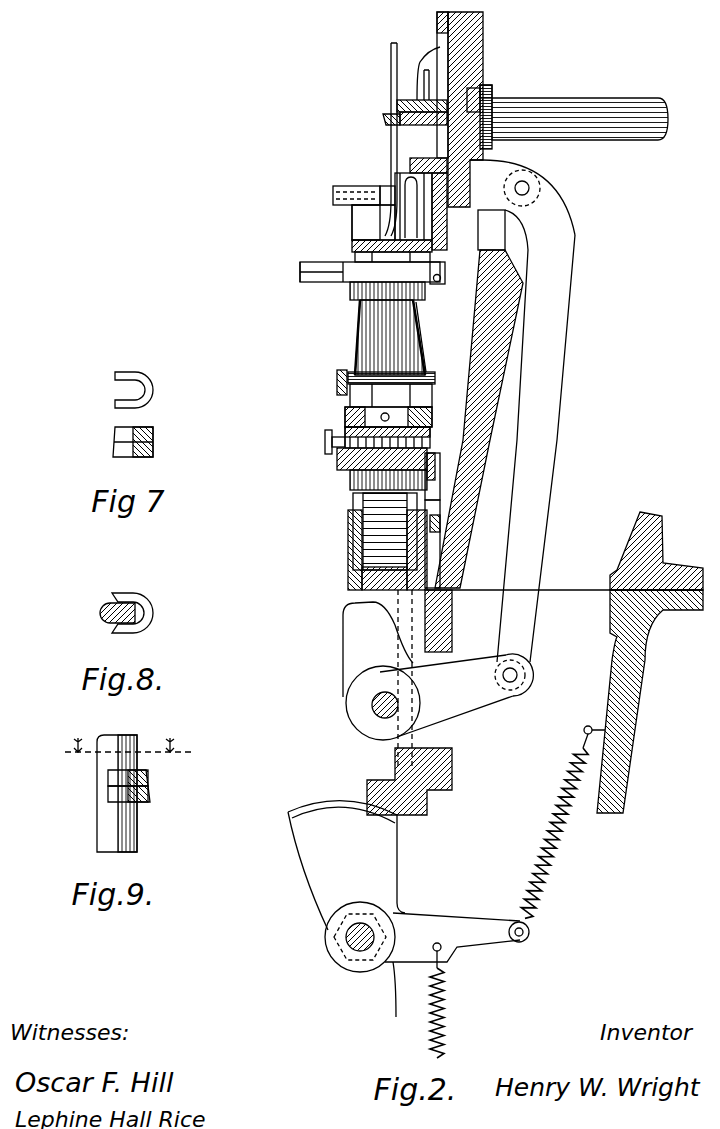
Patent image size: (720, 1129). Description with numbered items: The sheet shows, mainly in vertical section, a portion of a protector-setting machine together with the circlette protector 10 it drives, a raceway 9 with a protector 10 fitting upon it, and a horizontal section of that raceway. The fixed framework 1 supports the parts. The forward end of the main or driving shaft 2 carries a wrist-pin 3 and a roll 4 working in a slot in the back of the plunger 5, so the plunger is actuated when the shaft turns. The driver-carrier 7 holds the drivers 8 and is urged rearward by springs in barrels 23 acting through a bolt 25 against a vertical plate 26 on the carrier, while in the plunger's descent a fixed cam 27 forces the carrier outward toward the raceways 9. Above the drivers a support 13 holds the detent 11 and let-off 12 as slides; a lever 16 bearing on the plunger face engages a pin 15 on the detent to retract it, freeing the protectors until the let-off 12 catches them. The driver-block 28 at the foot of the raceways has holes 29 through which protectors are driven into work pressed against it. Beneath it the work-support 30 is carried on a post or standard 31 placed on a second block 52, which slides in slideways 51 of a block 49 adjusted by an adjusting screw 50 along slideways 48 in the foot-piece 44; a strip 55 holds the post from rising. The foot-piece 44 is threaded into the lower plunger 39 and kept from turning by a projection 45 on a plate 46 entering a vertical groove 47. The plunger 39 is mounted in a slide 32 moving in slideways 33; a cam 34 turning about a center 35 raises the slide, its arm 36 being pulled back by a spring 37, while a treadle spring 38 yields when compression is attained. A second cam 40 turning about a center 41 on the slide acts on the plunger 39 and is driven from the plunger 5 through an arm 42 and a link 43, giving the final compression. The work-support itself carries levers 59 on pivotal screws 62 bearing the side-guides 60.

In FIG. 2, the fixed framework 1 is at (437, 22).
In FIG. 2, the main or driving shaft 2 is at (636, 143).
In FIG. 2, the wrist-pin 3 is at (493, 98).
In FIG. 2, the roll 4 is at (481, 98).
In FIG. 2, the plunger 5 is at (486, 48).
In FIG. 2, the driver-carrier 7 is at (405, 182).
In FIG. 2, the drivers 8 is at (448, 232).
In FIG. 9, the drivers 8 is at (126, 751).
In FIG. 2, the raceways 9 is at (388, 58).
In FIG. 8, the raceways 9 is at (100, 618).
In FIG. 9, the raceways 9 is at (98, 823).
In FIG. 7, the protector 10 is at (100, 455).
In FIG. 8, the protector 10 is at (145, 597).
In FIG. 9, the protector 10 is at (152, 793).
In FIG. 2, the detent 11 is at (403, 101).
In FIG. 2, the let-off 12 is at (398, 114).
In FIG. 2, the support 13 is at (385, 119).
In FIG. 2, the pin 15 is at (483, 86).
In FIG. 2, the lever 16 is at (438, 45).
In FIG. 2, the barrels 23 is at (348, 208).
In FIG. 2, the bolt 25 is at (331, 194).
In FIG. 2, the vertical plate 26 is at (365, 223).
In FIG. 2, the fixed cam 27 is at (508, 228).
In FIG. 2, the driver-block 28 is at (303, 263).
In FIG. 2, the holes 29 is at (410, 293).
In FIG. 2, the work-support 30 is at (298, 276).
In FIG. 2, the post or standard 31 is at (355, 339).
In FIG. 2, the slide 32 is at (346, 558).
In FIG. 2, the slideways 33 is at (418, 745).
In FIG. 2, the cam 34 is at (320, 858).
In FIG. 2, the center 35 is at (357, 940).
In FIG. 2, the arm 36 is at (447, 923).
In FIG. 2, the spring 37 is at (540, 842).
In FIG. 2, the treadle-connection spring 38 is at (450, 1006).
In FIG. 2, the lower plunger 39 is at (360, 522).
In FIG. 2, the second cam 40 is at (355, 632).
In FIG. 2, the center 41 is at (376, 712).
In FIG. 2, the arm 42 is at (472, 698).
In FIG. 2, the link 43 is at (540, 493).
In FIG. 2, the foot-piece 44 is at (348, 478).
In FIG. 2, the projection 45 is at (433, 462).
In FIG. 2, the plate 46 is at (438, 504).
In FIG. 2, the vertical groove 47 is at (432, 480).
In FIG. 2, the slideways 48 is at (428, 442).
In FIG. 2, the block 49 is at (360, 419).
In FIG. 2, the adjusting screw 50 is at (322, 446).
In FIG. 2, the slideways 51 is at (343, 441).
In FIG. 2, the second block 52 is at (348, 399).
In FIG. 2, the strip 55 is at (386, 378).
In FIG. 2, the levers 59 is at (420, 306).
In FIG. 2, the side-guides 60 is at (366, 260).
In FIG. 2, the pivotal screws 62 is at (430, 283).